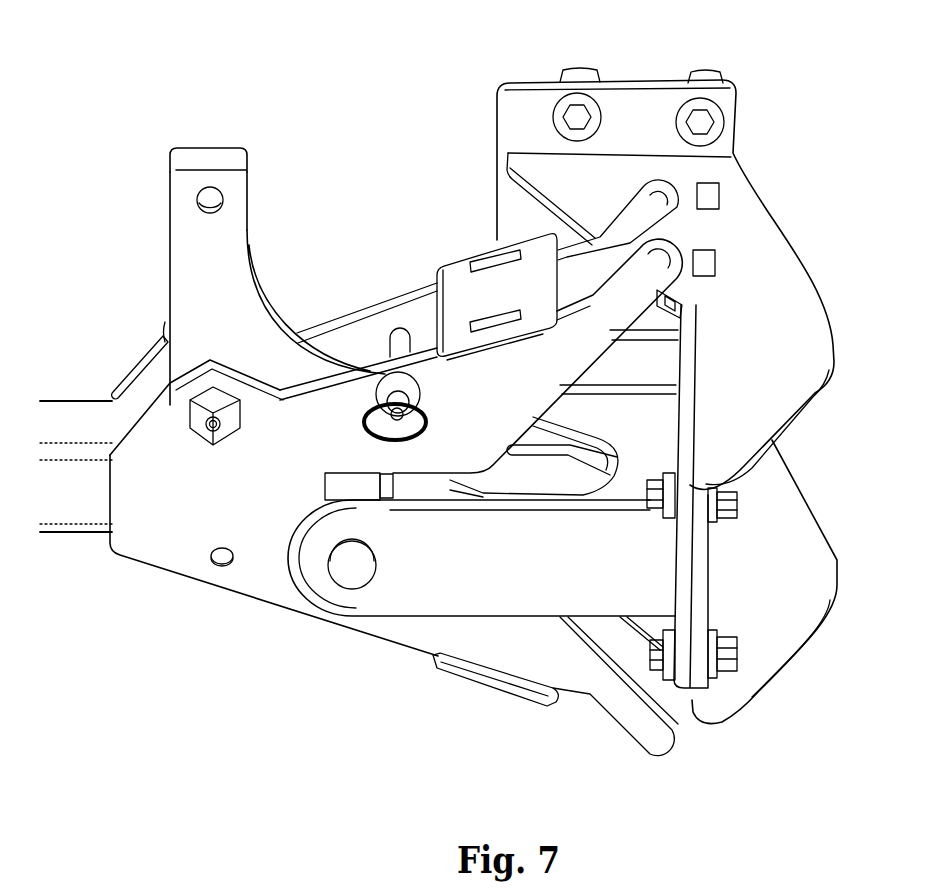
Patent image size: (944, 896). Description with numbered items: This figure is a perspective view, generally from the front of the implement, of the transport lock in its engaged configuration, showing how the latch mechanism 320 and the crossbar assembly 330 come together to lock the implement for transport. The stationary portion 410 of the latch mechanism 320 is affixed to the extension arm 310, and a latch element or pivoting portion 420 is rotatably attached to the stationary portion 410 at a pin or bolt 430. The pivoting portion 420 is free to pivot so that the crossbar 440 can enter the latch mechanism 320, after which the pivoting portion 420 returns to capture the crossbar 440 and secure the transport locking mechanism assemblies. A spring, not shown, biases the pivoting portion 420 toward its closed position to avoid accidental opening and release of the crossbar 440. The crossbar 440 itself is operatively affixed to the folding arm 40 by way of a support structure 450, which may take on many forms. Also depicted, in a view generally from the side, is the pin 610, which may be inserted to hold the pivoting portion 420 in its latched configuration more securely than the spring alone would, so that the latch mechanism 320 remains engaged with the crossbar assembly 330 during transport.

The folding arm 40 is at (582, 29).
The extension arm 310 is at (88, 501).
The latch mechanism 320 is at (396, 452).
The crossbar assembly 330 is at (527, 650).
The stationary portion 410 is at (253, 550).
The latch element 420 is at (227, 307).
The pin or bolt 430 is at (185, 412).
The crossbar 440 is at (350, 487).
The support structure 450 is at (563, 577).
The pin 610 is at (418, 397).